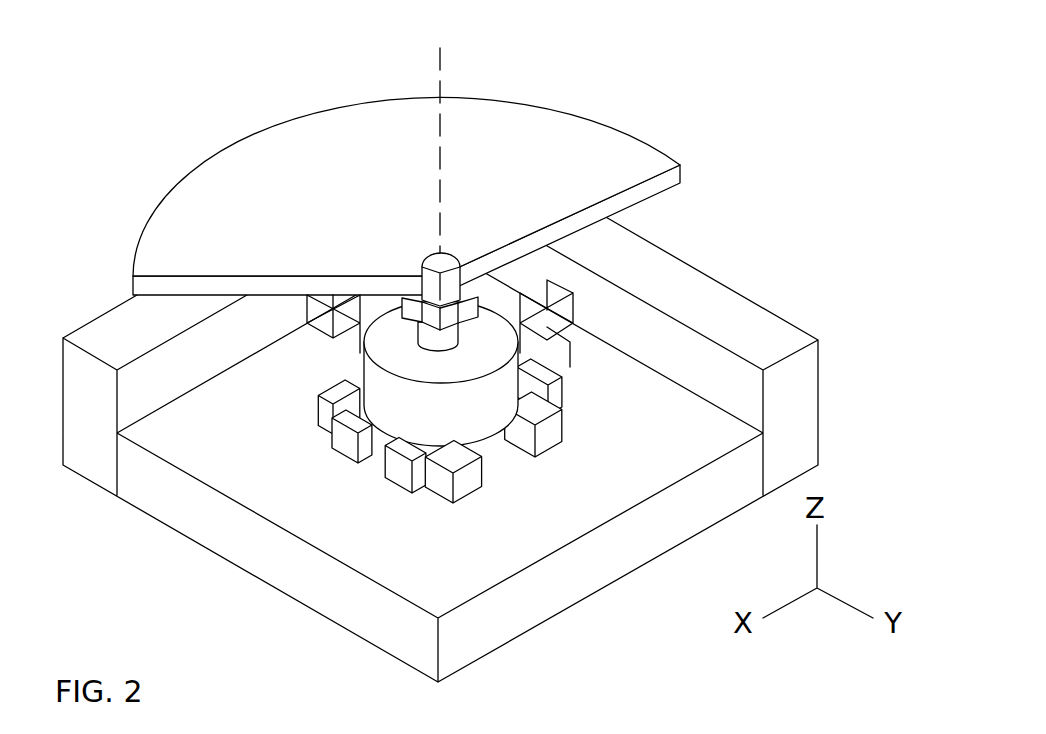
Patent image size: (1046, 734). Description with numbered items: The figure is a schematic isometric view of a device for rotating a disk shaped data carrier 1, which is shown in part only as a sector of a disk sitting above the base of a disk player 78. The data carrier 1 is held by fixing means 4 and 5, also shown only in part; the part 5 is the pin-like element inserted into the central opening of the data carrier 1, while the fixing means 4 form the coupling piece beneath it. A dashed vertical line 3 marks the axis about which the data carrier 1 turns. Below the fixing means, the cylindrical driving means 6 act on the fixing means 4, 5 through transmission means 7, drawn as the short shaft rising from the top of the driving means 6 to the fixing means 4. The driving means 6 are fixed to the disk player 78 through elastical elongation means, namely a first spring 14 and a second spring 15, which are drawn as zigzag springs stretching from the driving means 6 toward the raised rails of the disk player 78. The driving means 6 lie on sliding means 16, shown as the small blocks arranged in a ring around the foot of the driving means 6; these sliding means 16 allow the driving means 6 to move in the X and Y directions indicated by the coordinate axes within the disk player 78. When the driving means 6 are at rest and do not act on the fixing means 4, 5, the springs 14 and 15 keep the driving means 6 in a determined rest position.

The disk shaped data carrier 1 is at (637, 165).
The rotation axis 3 is at (440, 48).
The fixing means 4 is at (477, 312).
The fixing means 5 is at (450, 258).
The driving means 6 is at (482, 425).
The transmission means 7 is at (432, 338).
The first spring 14 is at (520, 368).
The second spring 15 is at (330, 330).
The sliding means 16 is at (547, 435).
The disk player 78 is at (83, 435).